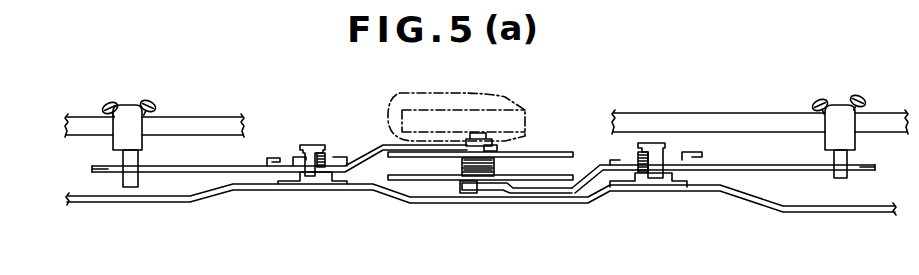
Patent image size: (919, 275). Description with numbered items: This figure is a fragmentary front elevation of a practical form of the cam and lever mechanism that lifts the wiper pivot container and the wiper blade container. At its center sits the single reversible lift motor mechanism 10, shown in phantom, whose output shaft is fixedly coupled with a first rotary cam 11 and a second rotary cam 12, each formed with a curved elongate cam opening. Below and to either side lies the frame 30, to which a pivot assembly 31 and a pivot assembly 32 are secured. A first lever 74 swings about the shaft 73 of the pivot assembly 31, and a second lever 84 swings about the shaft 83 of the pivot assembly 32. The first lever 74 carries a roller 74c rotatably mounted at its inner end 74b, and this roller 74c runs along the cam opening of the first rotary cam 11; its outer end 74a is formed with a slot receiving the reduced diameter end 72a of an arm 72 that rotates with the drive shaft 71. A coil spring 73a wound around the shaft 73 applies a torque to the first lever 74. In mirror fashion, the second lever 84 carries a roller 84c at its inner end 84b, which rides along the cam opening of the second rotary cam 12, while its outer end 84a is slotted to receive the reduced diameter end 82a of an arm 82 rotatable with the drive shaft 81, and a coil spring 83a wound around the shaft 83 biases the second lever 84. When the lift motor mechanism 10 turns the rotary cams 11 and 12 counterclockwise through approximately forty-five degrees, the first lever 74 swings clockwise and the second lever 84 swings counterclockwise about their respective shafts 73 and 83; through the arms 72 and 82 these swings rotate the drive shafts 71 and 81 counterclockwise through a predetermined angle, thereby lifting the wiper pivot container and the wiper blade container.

The lift motor mechanism 10 is at (413, 110).
The first rotary cam 11 is at (542, 181).
The second rotary cam 12 is at (560, 152).
The frame 30 is at (385, 197).
The pivot assembly 31 is at (618, 188).
The pivot assembly 32 is at (281, 184).
The drive shaft 71 is at (743, 118).
The arm 72 is at (837, 106).
The reduced diameter end 72a is at (840, 179).
The shaft 73 is at (640, 178).
The coil spring 73a is at (636, 155).
The first lever 74 is at (768, 170).
The outer end 74a is at (853, 170).
The inner end 74b is at (493, 189).
The roller 74c is at (472, 188).
The drive shaft 81 is at (227, 119).
The arm 82 is at (132, 107).
The reduced diameter end 82a is at (132, 184).
The shaft 83 is at (320, 177).
The coil spring 83a is at (333, 163).
The second lever 84 is at (200, 173).
The outer end 84a is at (103, 173).
The inner end 84b is at (468, 142).
The roller 84c is at (490, 148).